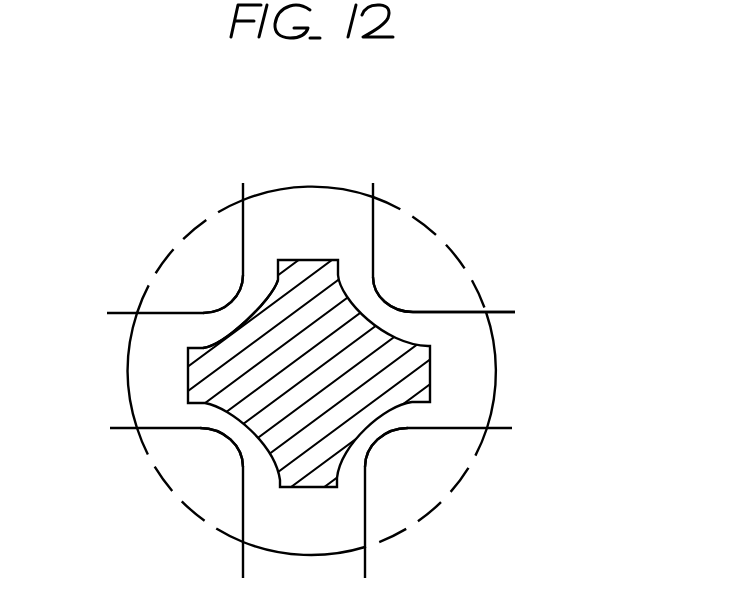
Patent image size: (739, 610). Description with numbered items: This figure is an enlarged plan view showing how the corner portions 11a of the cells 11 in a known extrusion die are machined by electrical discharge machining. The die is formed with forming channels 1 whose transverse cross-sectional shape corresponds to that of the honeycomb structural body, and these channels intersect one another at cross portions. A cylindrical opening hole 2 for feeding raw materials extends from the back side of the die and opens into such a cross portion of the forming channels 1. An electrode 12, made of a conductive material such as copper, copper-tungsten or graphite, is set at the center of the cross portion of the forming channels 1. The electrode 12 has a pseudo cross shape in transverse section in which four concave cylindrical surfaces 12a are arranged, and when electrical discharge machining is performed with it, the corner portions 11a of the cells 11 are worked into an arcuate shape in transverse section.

The forming channel 1 is at (322, 182).
The opening hole 2 is at (485, 352).
The cell 11 is at (453, 222).
The corner portion 11a is at (228, 293).
The electrode 12 is at (352, 412).
The concave cylindrical surface 12a is at (128, 213).